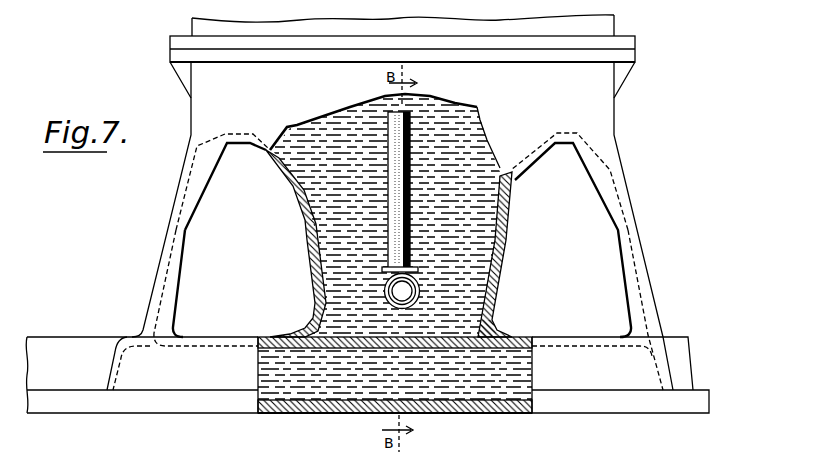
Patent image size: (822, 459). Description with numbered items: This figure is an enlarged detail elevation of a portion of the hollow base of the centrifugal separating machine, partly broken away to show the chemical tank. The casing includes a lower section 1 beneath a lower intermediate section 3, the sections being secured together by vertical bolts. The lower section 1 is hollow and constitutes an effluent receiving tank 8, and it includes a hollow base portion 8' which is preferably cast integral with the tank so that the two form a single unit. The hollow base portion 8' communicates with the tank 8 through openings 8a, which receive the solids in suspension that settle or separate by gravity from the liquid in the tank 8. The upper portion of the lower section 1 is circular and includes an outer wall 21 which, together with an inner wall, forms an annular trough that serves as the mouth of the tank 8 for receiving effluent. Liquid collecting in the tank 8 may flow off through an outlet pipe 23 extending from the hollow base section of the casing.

The lower section 1 is at (603, 70).
The lower intermediate section 3 is at (402, 37).
The outer wall 21 is at (580, 110).
The outlet pipe 23 is at (392, 230).
The effluent receiving tank 8 is at (398, 215).
The openings 8a is at (467, 340).
The hollow base portion 8' is at (395, 387).